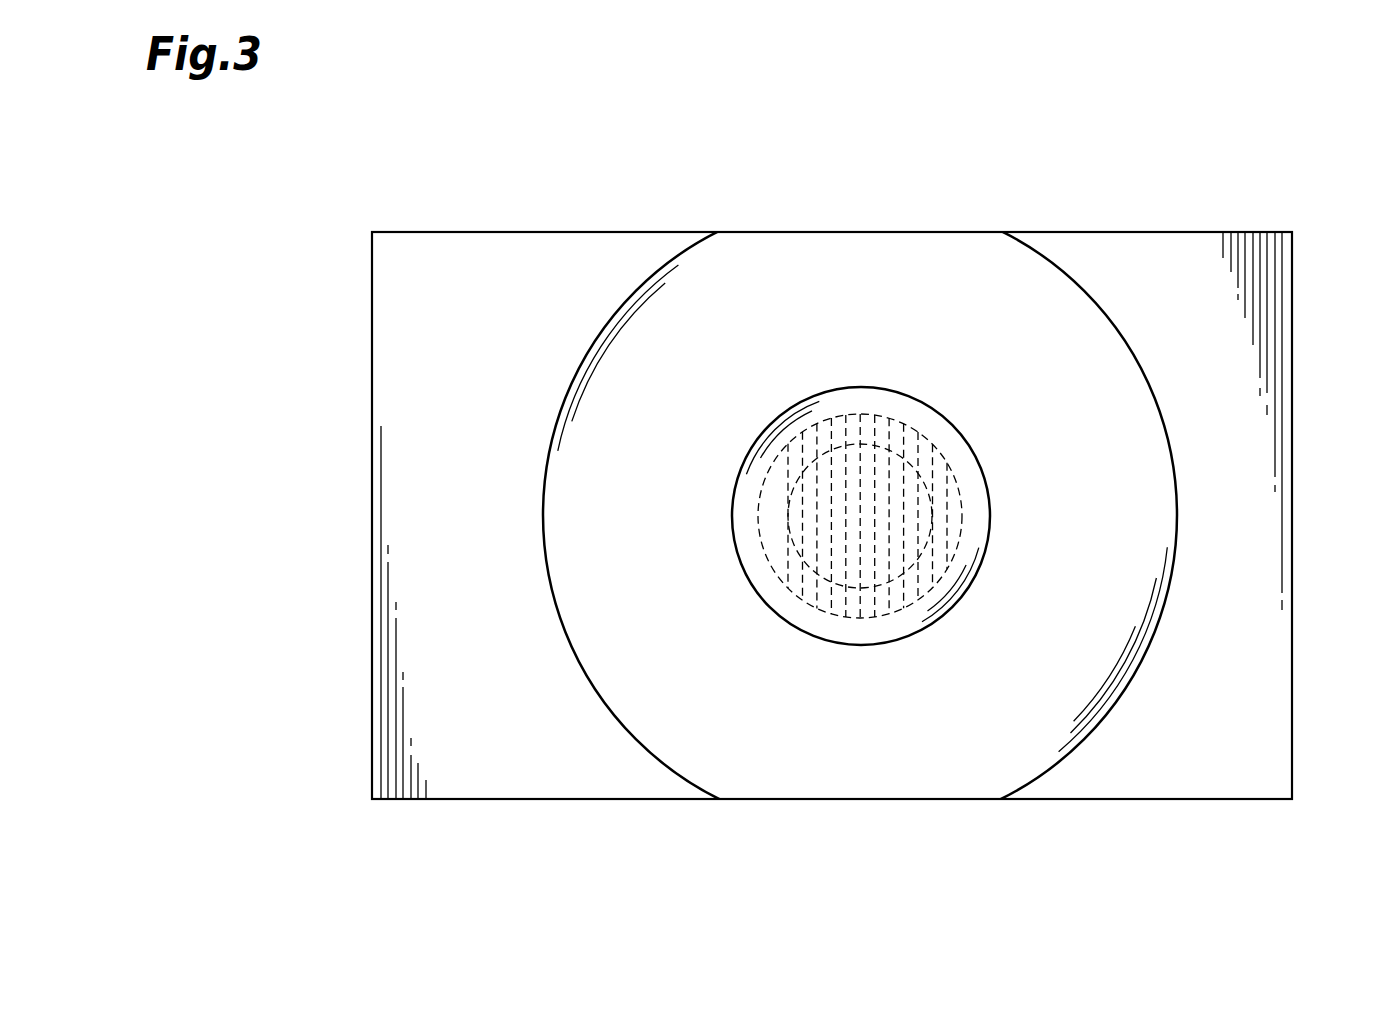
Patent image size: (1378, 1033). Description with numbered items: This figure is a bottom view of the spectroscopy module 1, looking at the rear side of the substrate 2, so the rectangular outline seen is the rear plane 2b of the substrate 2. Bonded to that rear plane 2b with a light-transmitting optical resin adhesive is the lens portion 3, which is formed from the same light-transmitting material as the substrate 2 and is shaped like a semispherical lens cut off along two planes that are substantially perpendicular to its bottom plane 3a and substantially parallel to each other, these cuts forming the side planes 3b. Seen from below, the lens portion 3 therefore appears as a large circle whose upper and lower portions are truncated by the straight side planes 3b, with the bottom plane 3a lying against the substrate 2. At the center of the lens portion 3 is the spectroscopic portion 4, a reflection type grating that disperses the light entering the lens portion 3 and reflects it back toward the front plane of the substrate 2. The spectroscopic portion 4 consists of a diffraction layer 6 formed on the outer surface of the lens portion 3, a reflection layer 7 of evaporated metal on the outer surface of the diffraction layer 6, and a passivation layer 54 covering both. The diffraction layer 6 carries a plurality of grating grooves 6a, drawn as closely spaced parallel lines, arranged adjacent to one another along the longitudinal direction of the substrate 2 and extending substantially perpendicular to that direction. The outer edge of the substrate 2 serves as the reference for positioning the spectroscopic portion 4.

The spectroscopy module 1 is at (1168, 143).
The substrate 2 is at (1293, 692).
The rear plane of the substrate 2b is at (1157, 780).
The lens portion 3 is at (557, 490).
The bottom plane of the lens portion 3a is at (762, 768).
The side planes of the lens portion 3b is at (940, 231).
The spectroscopic portion 4 is at (769, 612).
The passivation layer 54 is at (966, 469).
The diffraction layer 6 is at (918, 436).
The grating grooves 6a is at (803, 460).
The reflection layer 7 is at (926, 549).